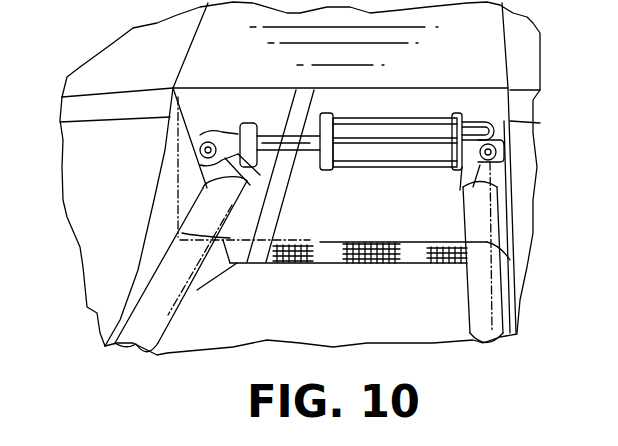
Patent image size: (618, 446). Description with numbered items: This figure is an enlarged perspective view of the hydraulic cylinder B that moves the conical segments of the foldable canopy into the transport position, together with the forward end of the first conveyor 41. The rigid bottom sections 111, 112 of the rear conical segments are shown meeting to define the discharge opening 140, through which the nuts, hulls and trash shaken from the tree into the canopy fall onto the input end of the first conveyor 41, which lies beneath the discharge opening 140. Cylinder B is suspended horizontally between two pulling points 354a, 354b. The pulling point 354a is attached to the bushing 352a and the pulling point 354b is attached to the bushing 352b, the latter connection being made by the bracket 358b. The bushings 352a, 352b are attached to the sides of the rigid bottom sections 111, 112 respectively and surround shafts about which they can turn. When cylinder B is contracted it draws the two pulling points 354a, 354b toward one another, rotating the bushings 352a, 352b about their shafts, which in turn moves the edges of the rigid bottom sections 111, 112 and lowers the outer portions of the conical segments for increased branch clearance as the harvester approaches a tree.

The rigid bottom section 112 is at (103, 245).
The rigid bottom section 111 is at (510, 260).
The discharge opening 140 is at (350, 323).
The first conveyor 41 is at (343, 250).
The bushing 352a is at (487, 317).
The bushing 352b is at (167, 315).
The pulling point 354a is at (490, 158).
The pulling point 354b is at (206, 140).
The bracket 358b is at (170, 203).
The hydraulic cylinder B is at (400, 147).